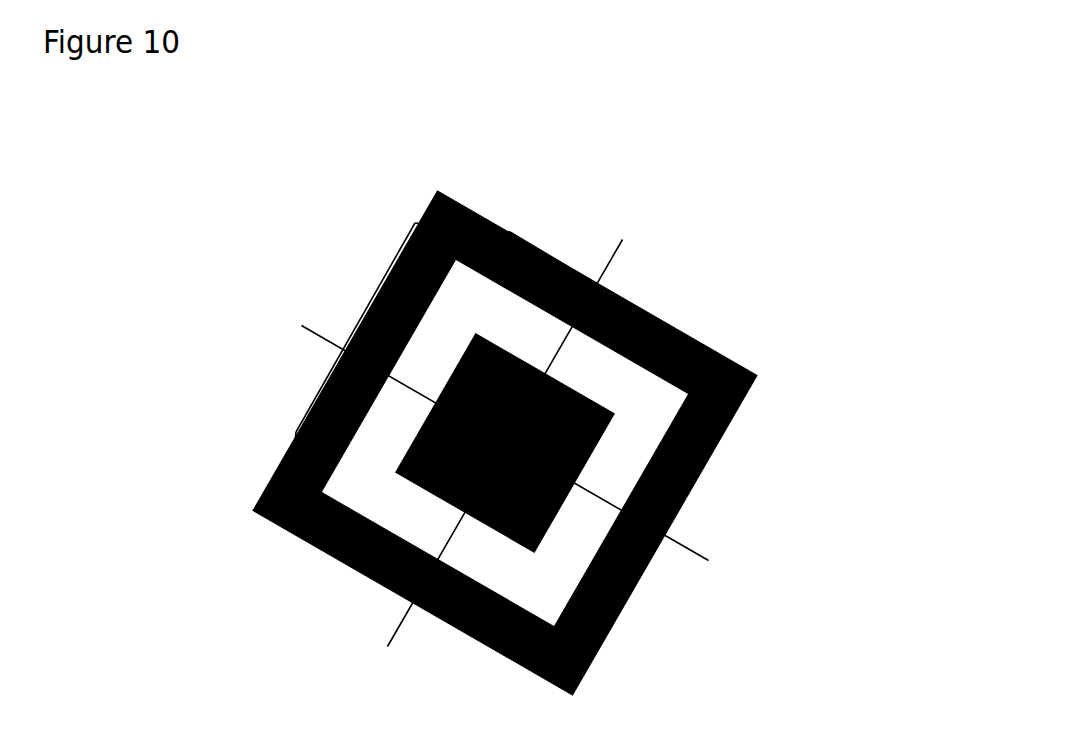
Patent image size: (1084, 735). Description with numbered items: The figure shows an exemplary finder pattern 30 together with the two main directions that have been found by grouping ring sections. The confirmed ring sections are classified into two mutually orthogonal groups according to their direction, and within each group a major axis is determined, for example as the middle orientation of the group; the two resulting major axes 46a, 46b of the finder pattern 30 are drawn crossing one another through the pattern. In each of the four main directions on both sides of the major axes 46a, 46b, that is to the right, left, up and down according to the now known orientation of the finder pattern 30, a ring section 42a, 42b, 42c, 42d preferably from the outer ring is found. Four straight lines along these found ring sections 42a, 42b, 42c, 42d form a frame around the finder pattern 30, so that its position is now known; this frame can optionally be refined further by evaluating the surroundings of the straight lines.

The finder pattern 30 is at (868, 242).
The ring section 42a is at (693, 490).
The ring section 42b is at (317, 400).
The ring section 42c is at (630, 300).
The ring section 42d is at (387, 595).
The major axis 46a is at (322, 327).
The major axis 46b is at (618, 252).